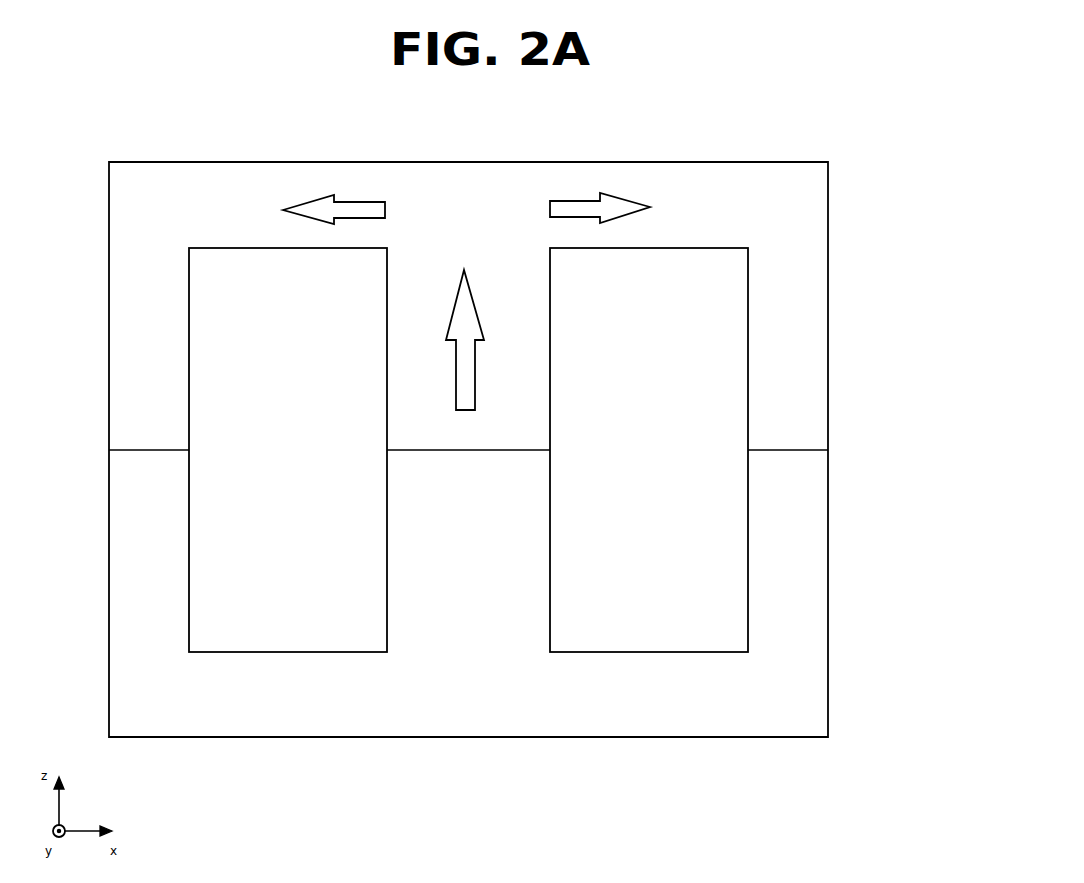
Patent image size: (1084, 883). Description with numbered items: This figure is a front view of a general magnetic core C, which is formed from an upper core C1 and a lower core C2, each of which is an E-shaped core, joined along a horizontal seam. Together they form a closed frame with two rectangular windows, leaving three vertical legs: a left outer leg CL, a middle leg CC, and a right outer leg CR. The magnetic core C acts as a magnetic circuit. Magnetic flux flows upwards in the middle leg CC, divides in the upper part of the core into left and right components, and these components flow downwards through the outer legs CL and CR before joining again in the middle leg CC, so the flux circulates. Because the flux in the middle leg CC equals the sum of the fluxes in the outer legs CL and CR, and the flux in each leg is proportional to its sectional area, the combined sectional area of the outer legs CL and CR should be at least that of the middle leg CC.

The magnetic core C is at (534, 449).
The upper core C1 is at (833, 399).
The lower core C2 is at (510, 593).
The left outer leg CL is at (183, 432).
The middle leg CC is at (537, 474).
The right outer leg CR is at (755, 436).